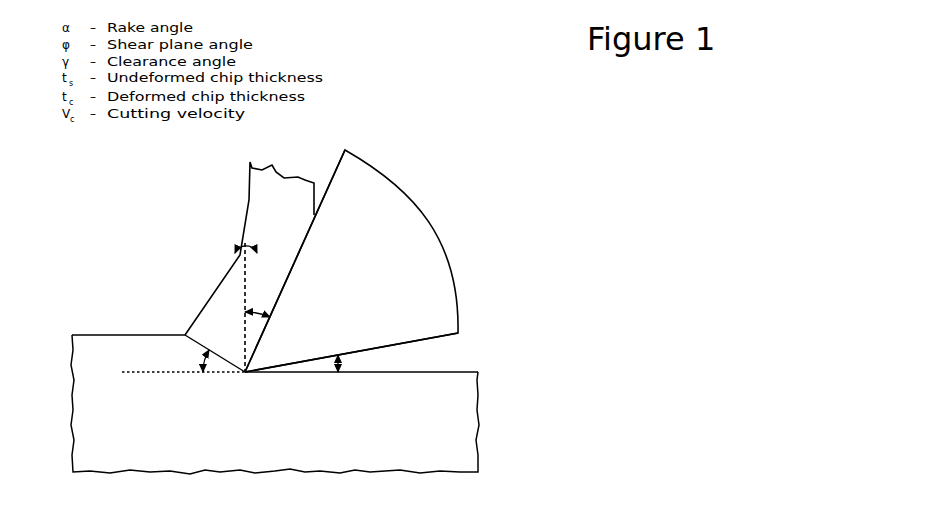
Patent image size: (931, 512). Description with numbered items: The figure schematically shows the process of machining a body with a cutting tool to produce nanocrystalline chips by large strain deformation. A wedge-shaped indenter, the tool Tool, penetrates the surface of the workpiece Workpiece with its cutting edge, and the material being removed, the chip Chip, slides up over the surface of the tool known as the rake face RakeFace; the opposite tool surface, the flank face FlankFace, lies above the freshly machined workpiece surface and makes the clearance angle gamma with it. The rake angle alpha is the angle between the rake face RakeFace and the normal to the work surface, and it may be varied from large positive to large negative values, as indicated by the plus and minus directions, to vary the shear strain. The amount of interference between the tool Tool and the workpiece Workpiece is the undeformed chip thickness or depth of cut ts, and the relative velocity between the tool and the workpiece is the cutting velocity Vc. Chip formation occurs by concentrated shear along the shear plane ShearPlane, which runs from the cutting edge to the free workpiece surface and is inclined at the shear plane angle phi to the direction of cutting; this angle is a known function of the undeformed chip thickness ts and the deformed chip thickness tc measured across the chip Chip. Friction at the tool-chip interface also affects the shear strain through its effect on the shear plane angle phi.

The workpiece Workpiece is at (275, 404).
The cutting tool Tool is at (351, 261).
The chip Chip is at (237, 224).
The rake face RakeFace is at (323, 198).
The flank face FlankFace is at (410, 342).
The shear plane ShearPlane is at (190, 340).
The undeformed chip thickness ts is at (89, 293).
The deformed chip thickness tc is at (307, 223).
The cutting velocity Vc is at (507, 230).
The rake angle alpha is at (249, 307).
The shear plane angle phi is at (197, 361).
The clearance angle gamma is at (345, 363).